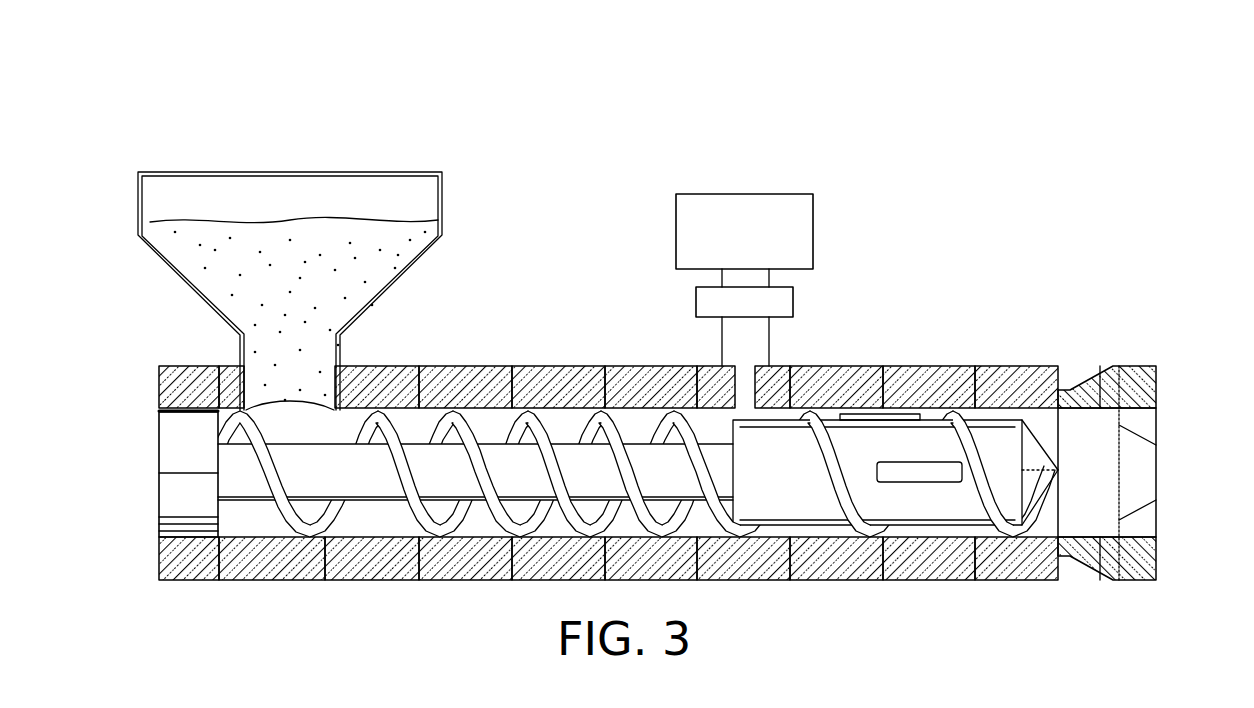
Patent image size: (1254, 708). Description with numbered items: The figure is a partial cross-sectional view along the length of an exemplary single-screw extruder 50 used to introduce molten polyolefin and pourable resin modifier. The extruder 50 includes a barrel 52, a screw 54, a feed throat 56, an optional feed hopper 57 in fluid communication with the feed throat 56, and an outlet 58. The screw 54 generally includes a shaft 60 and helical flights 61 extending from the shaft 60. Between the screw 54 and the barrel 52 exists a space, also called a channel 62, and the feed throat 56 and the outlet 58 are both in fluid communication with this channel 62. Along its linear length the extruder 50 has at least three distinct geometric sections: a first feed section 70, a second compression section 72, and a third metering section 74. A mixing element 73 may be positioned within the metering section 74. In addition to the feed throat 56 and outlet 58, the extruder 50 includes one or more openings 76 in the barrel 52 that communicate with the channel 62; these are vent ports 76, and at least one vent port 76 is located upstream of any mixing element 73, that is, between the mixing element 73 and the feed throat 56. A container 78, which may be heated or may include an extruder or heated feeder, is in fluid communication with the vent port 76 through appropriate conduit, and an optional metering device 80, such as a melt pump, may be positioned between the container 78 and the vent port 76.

The single-screw extruder 50 is at (702, 126).
The barrel 52 is at (487, 366).
The screw 54 is at (243, 480).
The feed throat 56 is at (300, 385).
The feed hopper 57 is at (442, 222).
The outlet 58 is at (1108, 470).
The shaft 60 is at (257, 487).
The helical flight 61 is at (380, 425).
The space or channel 62 is at (573, 405).
The feed section 70 is at (372, 524).
The compression section 72 is at (553, 532).
The mixing element 73 is at (945, 487).
The metering section 74 is at (843, 532).
The vent port 76 is at (745, 386).
The container 78 is at (813, 218).
The metering device 80 is at (793, 300).